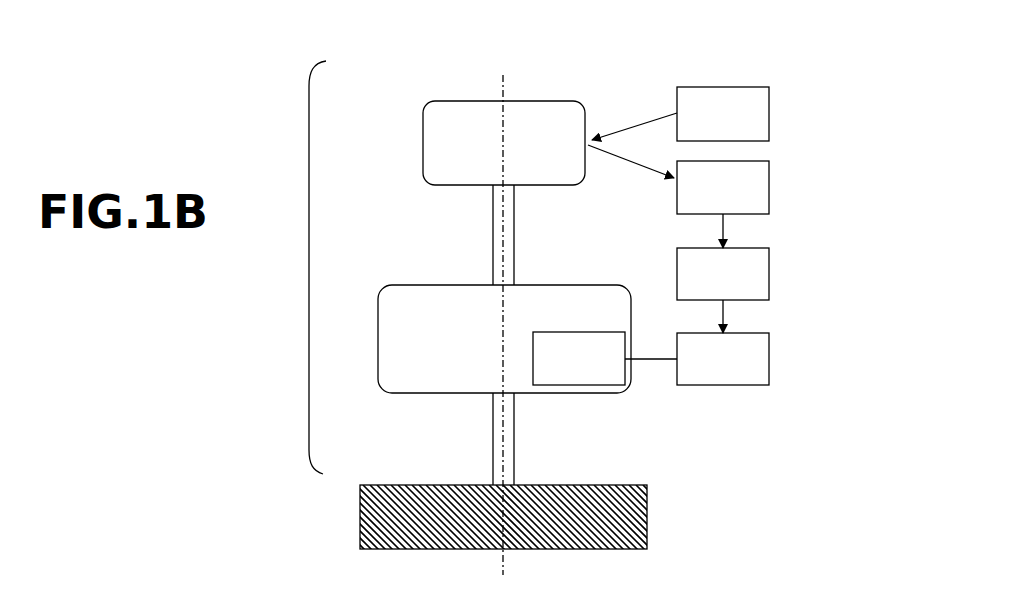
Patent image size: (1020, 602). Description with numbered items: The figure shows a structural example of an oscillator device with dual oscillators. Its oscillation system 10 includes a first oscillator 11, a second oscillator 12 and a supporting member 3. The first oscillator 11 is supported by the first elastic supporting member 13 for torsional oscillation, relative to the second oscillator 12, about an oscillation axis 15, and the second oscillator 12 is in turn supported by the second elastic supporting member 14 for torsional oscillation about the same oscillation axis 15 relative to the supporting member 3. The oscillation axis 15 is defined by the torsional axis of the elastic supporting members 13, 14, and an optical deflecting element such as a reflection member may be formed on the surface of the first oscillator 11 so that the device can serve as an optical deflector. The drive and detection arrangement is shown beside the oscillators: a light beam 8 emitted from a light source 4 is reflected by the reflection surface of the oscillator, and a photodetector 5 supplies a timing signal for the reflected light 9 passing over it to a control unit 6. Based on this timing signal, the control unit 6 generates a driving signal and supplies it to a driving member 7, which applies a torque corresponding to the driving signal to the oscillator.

The supporting member 3 is at (647, 515).
The light source 4 is at (723, 114).
The photodetector 5 is at (723, 187).
The control unit 6 is at (723, 274).
The driving member 7 is at (651, 358).
The light beam 8 is at (634, 120).
The reflected light 9 is at (631, 169).
The oscillation system 10 is at (309, 143).
The first oscillator 11 is at (504, 143).
The second oscillator 12 is at (504, 339).
The first elastic supporting member 13 is at (493, 235).
The second elastic supporting member 14 is at (493, 440).
The oscillation axis 15 is at (500, 312).